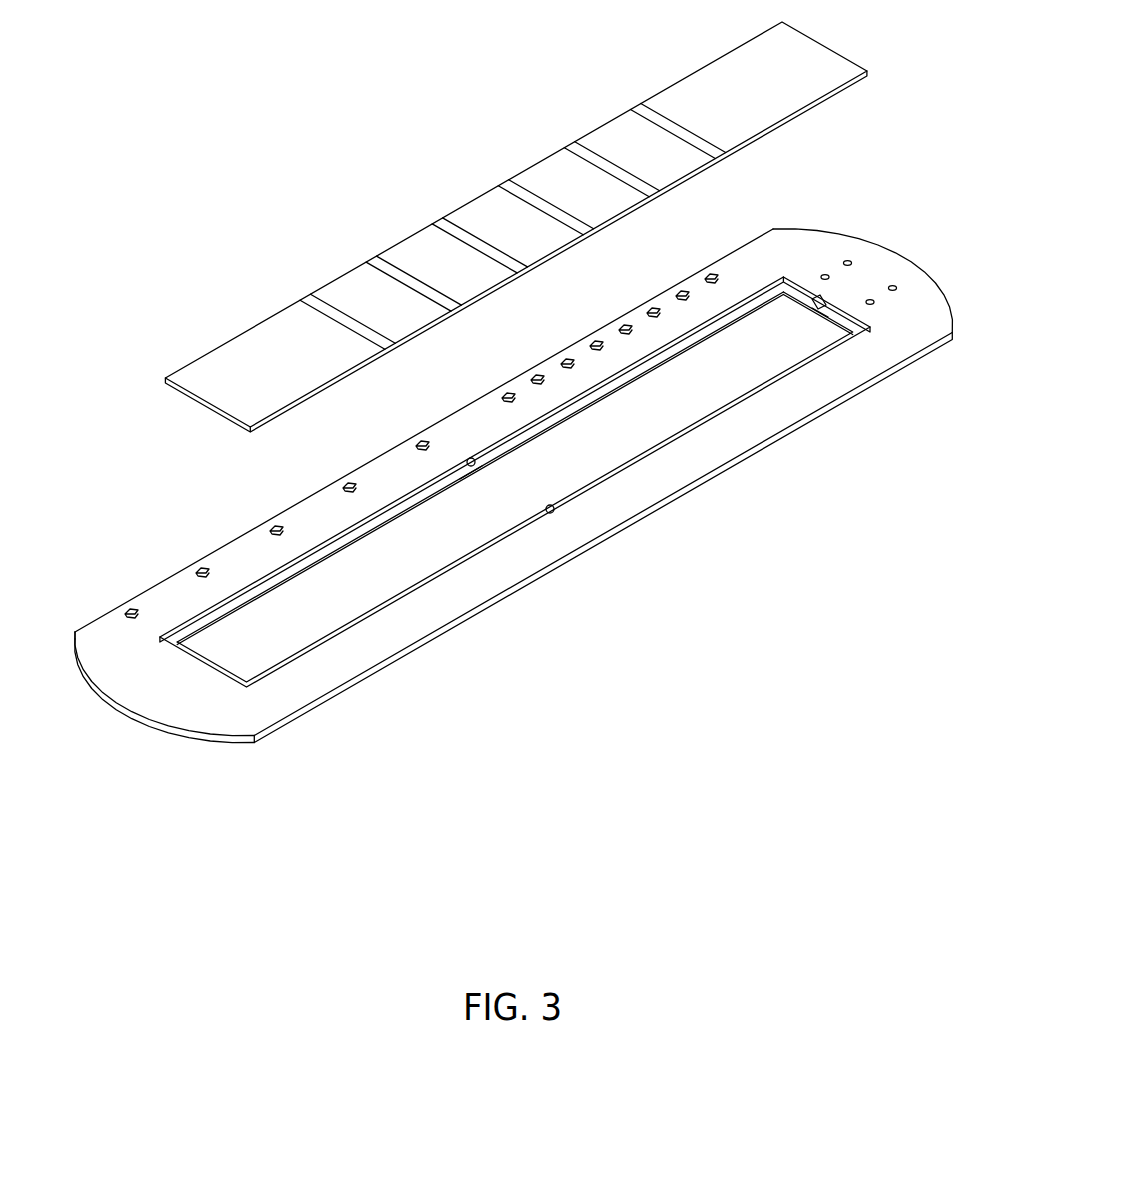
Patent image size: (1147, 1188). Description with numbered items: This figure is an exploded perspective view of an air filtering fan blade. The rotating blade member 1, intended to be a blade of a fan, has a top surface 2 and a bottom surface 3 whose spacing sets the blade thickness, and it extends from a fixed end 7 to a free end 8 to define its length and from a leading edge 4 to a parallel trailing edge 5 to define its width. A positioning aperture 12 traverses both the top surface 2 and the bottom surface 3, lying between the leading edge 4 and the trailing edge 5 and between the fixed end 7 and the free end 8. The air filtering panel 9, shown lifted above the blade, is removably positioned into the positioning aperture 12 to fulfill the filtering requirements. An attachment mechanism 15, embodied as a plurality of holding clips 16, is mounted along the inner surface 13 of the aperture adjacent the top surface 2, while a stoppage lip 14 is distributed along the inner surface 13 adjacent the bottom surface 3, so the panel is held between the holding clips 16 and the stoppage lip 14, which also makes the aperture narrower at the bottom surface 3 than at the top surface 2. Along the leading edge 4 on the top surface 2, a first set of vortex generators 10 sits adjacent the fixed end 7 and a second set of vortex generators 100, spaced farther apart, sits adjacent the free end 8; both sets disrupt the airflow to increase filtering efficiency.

The rotating blade member 1 is at (795, 215).
The top surface 2 is at (525, 489).
The bottom surface 3 is at (893, 382).
The leading edge 4 is at (457, 412).
The trailing edge 5 is at (672, 498).
The fixed end 7 is at (862, 240).
The free end 8 is at (132, 708).
The air filtering panel 9 is at (709, 109).
The first set of vortex generators 10 is at (659, 313).
The positioning aperture 12 is at (714, 400).
The inner surface 13 is at (321, 548).
The stoppage lip 14 is at (277, 580).
The attachment mechanism 15 is at (470, 474).
The holding clips 16 is at (478, 464).
The second set of vortex generators 100 is at (424, 445).